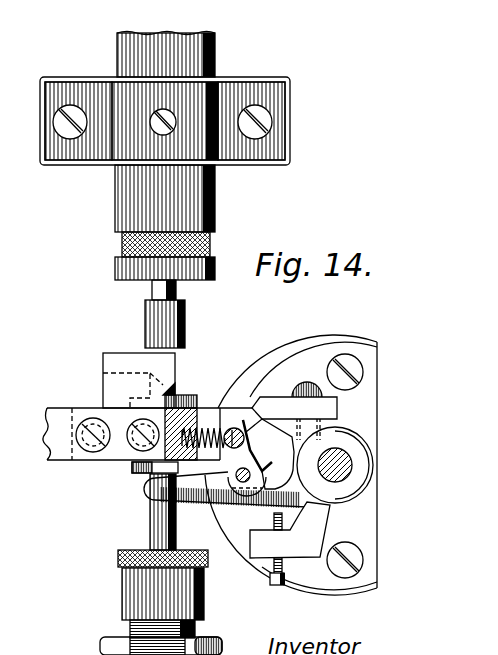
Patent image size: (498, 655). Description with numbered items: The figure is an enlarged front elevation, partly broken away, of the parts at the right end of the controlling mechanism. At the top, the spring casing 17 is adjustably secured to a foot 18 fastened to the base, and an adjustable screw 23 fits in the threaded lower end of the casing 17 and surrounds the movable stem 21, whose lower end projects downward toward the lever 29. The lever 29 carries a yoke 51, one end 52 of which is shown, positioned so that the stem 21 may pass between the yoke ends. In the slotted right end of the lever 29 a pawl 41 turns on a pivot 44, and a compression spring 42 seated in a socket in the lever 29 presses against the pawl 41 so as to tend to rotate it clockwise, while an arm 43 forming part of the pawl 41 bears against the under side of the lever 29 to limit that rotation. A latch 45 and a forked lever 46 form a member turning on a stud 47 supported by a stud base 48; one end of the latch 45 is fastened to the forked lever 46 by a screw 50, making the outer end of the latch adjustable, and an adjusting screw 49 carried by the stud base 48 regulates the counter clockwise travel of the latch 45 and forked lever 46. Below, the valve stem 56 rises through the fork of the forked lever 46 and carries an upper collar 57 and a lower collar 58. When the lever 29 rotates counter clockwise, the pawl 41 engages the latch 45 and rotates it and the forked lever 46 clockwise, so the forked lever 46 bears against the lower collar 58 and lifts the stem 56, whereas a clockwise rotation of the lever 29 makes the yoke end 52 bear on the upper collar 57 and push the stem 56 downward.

The spring casing 17 is at (118, 47).
The foot 18 is at (105, 145).
The adjustable screw 23 is at (118, 268).
The movable stem 21 is at (178, 293).
The yoke end 52 is at (142, 324).
The yoke 51 is at (108, 384).
The upper collar 57 is at (198, 393).
The lever 29 is at (72, 450).
The lower collar 58 is at (137, 472).
The valve stem 56 is at (150, 528).
The stud base 48 is at (360, 530).
The stud 47 is at (372, 455).
The screw 50 is at (305, 383).
The latch 45 is at (268, 398).
The pawl 41 is at (222, 420).
The compression spring 42 is at (210, 440).
The pivot 44 is at (252, 476).
The arm 43 is at (190, 480).
The forked lever 46 is at (256, 512).
The adjusting screw 49 is at (272, 585).